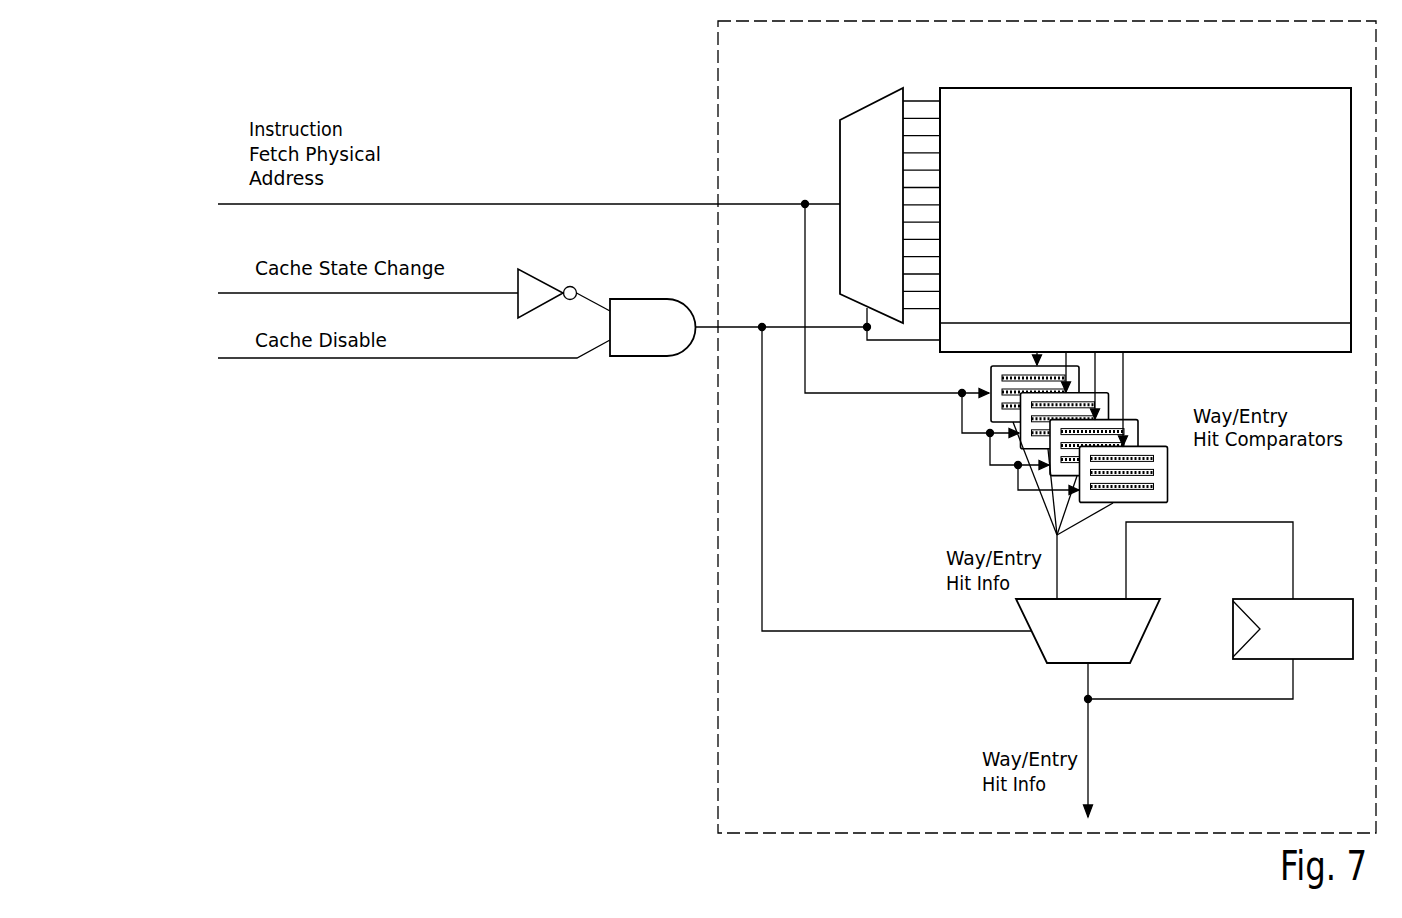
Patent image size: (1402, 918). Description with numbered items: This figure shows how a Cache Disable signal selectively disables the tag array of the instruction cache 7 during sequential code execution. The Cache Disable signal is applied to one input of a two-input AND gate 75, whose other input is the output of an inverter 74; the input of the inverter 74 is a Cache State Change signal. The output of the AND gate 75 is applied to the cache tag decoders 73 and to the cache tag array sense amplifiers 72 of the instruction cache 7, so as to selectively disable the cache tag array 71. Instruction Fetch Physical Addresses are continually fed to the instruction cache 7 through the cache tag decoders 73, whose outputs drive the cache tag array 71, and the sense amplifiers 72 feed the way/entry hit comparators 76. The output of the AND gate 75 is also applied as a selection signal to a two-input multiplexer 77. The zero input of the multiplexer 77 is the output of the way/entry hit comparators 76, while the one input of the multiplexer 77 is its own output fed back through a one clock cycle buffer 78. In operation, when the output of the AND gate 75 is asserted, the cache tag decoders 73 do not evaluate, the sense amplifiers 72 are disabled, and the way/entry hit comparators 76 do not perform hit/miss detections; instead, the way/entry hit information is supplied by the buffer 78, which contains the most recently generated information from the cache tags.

The instruction cache 7 is at (1343, 63).
The cache tag array 71 is at (1133, 263).
The cache tag array sense amplifiers 72 is at (1267, 349).
The cache tag decoders 73 is at (855, 113).
The inverter 74 is at (550, 277).
The two-input AND gate 75 is at (647, 299).
The way/entry hit comparators 76 is at (1190, 487).
The two-input multiplexer 77 is at (1042, 654).
The one clock cycle buffer 78 is at (1319, 659).